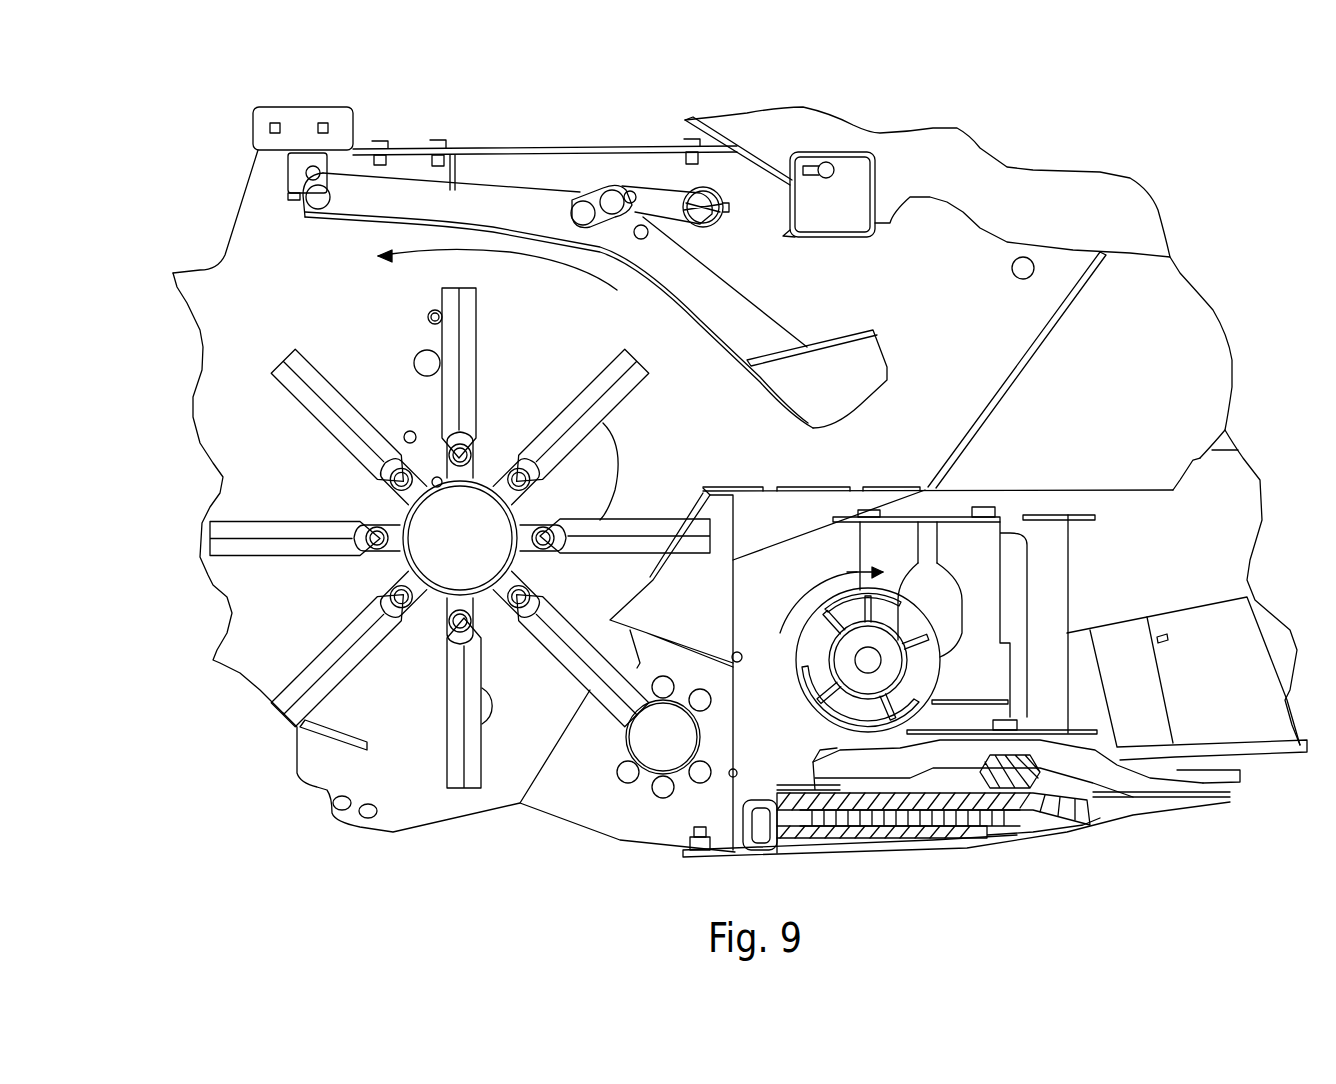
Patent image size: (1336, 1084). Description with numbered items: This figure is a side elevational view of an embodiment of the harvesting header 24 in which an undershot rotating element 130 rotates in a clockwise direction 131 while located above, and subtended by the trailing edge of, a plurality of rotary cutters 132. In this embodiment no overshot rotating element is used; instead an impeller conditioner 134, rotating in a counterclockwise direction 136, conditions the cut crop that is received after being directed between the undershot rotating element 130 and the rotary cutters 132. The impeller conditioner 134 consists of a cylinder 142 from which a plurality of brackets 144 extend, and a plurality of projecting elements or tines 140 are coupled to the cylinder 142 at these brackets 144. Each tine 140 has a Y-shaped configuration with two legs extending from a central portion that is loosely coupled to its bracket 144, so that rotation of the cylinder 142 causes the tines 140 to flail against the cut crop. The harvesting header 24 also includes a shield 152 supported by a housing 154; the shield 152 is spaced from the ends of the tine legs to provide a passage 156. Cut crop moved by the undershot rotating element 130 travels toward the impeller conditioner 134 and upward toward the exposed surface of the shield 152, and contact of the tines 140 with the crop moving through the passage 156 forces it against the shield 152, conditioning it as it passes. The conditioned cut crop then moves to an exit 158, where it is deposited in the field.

The harvesting header 24 is at (917, 117).
The undershot rotating element 130 is at (917, 617).
The clockwise direction 131 is at (783, 630).
The rotary cutters 132 is at (1140, 773).
The impeller conditioner 134 is at (280, 640).
The counterclockwise direction 136 is at (247, 263).
The tines 140 is at (647, 527).
The cylinder 142 is at (397, 560).
The brackets 144 is at (397, 523).
The shield 152 is at (420, 187).
The housing 154 is at (567, 147).
The passage 156 is at (513, 253).
The exit 158 is at (143, 287).